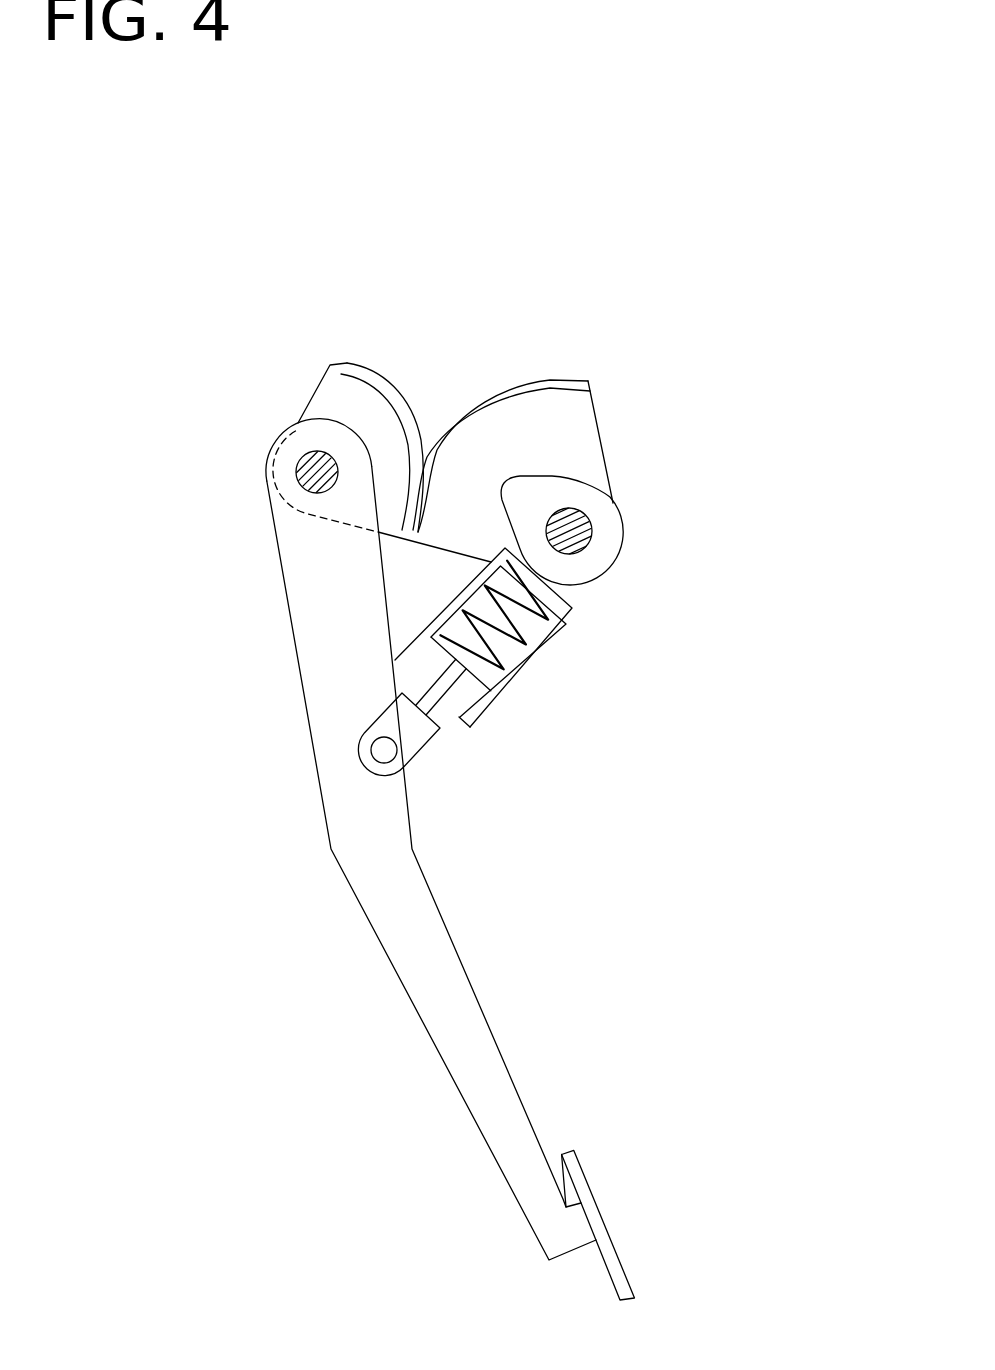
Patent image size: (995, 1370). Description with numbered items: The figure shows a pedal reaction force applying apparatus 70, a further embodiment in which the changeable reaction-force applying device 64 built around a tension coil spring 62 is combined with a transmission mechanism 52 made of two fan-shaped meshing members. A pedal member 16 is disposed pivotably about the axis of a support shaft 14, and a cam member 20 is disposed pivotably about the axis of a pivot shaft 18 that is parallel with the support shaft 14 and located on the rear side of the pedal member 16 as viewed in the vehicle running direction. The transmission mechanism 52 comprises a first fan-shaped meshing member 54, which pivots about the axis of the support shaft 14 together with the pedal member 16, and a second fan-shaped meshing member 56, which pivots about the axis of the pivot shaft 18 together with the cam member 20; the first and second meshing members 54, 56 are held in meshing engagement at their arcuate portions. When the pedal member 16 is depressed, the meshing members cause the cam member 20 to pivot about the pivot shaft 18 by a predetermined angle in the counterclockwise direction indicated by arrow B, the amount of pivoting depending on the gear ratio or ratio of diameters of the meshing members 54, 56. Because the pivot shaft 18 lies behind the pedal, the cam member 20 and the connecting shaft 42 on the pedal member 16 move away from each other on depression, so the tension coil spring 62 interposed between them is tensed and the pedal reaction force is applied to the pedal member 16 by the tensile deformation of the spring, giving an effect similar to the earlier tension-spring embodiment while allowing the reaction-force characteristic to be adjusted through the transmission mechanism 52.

The support shaft 14 is at (297, 484).
The pedal member 16 is at (436, 962).
The pivot shaft 18 is at (573, 553).
The cam member 20 is at (578, 493).
The connecting shaft 42 is at (386, 750).
The transmission mechanism 52 is at (464, 330).
The first fan-shaped meshing member 54 is at (342, 390).
The second fan-shaped meshing member 56 is at (573, 415).
The tension coil spring 62 is at (533, 647).
The changeable reaction-force applying device 64 is at (495, 686).
The pedal reaction force applying apparatus 70 is at (609, 288).
The arrow B is at (627, 494).